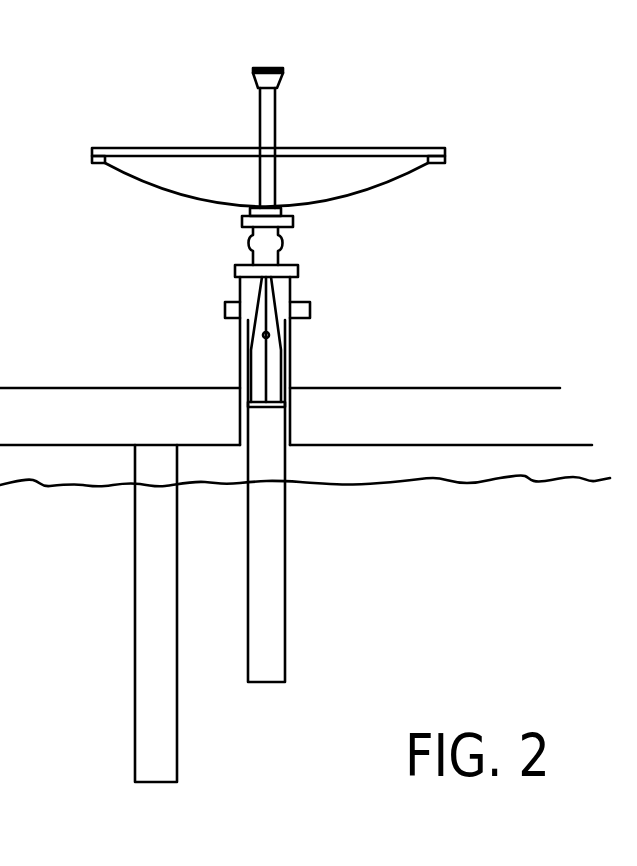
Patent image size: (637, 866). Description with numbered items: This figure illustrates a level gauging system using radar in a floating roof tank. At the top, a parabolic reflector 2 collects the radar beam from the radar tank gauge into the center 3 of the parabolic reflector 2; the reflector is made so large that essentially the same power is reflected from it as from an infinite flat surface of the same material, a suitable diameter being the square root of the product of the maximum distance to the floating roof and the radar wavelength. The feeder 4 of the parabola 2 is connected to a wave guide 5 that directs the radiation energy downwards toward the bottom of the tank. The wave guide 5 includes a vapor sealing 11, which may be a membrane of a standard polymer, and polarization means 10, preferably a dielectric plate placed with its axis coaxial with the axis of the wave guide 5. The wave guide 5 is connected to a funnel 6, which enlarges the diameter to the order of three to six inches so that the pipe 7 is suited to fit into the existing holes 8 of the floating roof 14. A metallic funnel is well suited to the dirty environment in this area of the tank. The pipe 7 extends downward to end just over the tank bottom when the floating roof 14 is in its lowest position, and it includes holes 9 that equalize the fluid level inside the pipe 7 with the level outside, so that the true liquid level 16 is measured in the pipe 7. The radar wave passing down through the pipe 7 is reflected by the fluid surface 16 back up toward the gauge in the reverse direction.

The parabolic reflector 2 is at (355, 170).
The center of the parabolic reflector 3 is at (277, 112).
The feeder 4 is at (264, 68).
The wave guide 5 is at (188, 222).
The funnel 6 is at (283, 290).
The pipe 7 is at (276, 552).
The existing holes of floating roof 8 is at (293, 357).
The holes 9 is at (245, 406).
The polarization means 10 is at (253, 245).
The vapor sealing 11 is at (297, 218).
The floating roof 14 is at (511, 417).
The liquid level 16 is at (526, 478).